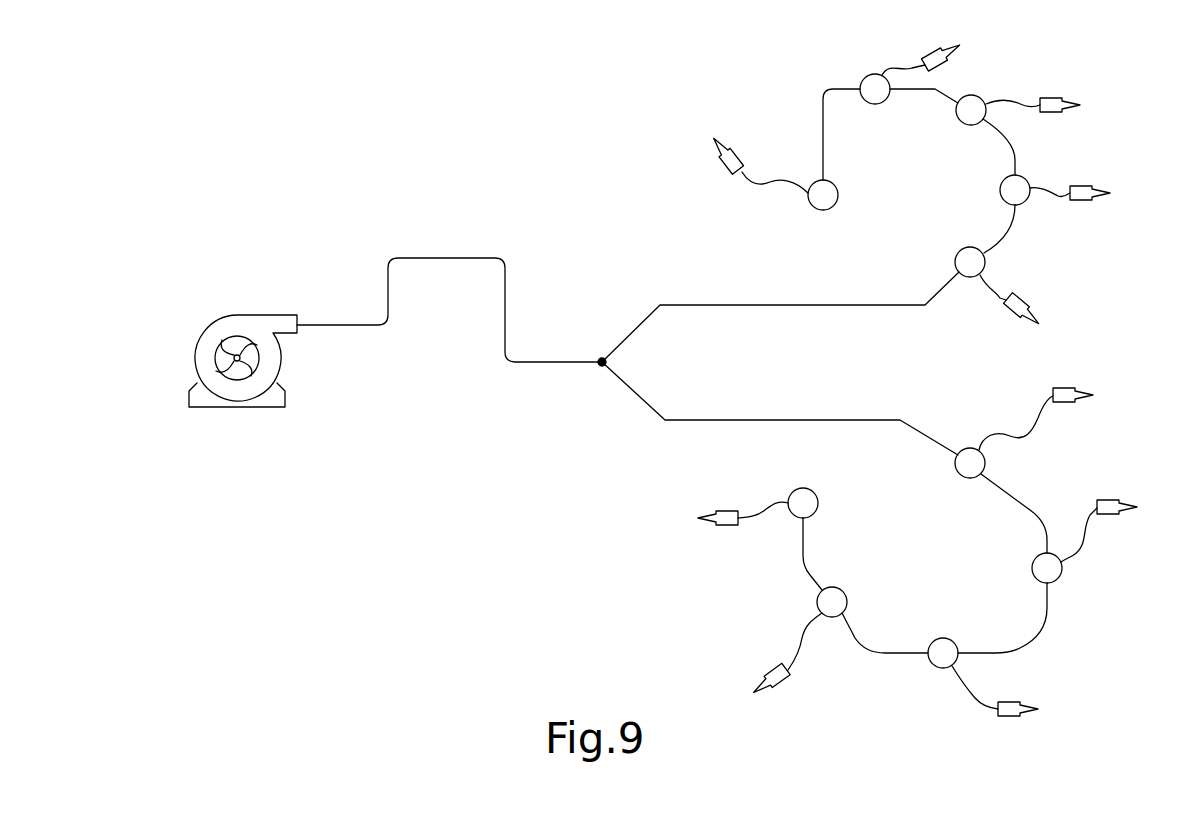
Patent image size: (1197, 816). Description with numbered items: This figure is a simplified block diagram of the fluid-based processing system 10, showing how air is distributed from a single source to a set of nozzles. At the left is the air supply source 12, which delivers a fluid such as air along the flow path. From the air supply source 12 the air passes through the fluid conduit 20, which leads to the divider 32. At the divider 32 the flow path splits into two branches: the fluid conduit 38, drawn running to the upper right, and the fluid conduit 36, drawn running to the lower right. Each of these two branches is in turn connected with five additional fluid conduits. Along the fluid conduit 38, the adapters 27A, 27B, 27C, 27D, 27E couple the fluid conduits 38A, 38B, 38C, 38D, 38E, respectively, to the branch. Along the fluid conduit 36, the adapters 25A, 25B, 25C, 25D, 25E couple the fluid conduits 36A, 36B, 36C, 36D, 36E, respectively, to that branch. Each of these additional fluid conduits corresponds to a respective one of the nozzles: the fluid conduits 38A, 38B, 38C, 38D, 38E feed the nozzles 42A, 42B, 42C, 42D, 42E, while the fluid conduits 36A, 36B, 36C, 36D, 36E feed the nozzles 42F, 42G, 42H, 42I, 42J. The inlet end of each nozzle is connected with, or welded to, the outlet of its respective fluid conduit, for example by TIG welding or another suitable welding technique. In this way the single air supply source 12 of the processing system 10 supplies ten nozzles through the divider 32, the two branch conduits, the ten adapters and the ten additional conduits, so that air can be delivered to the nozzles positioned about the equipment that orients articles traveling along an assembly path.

The processing system 10 is at (256, 98).
The air supply source 12 is at (207, 343).
The fluid conduit 20 is at (428, 258).
The divider 32 is at (602, 360).
The fluid conduit 36 is at (712, 420).
The fluid conduit 38 is at (718, 305).
The adapter 25A is at (815, 492).
The adapter 25B is at (842, 592).
The adapter 25C is at (948, 640).
The adapter 25D is at (1035, 560).
The adapter 25E is at (963, 478).
The adapter 27A is at (835, 207).
The adapter 27B is at (880, 104).
The adapter 27C is at (965, 125).
The adapter 27D is at (1000, 190).
The adapter 27E is at (958, 256).
The fluid conduit 36A is at (775, 500).
The fluid conduit 36B is at (800, 635).
The fluid conduit 36C is at (965, 695).
The fluid conduit 36D is at (1085, 545).
The fluid conduit 36E is at (1030, 418).
The fluid conduit 38A is at (768, 178).
The fluid conduit 38B is at (893, 66).
The fluid conduit 38C is at (1013, 100).
The fluid conduit 38D is at (1053, 197).
The fluid conduit 38E is at (993, 290).
The nozzle 42A is at (738, 150).
The nozzle 42B is at (960, 58).
The nozzle 42C is at (1048, 97).
The nozzle 42D is at (1080, 186).
The nozzle 42E is at (1025, 302).
The nozzle 42F is at (725, 510).
The nozzle 42G is at (780, 690).
The nozzle 42H is at (1010, 703).
The nozzle 42I is at (1105, 500).
The nozzle 42J is at (1062, 388).